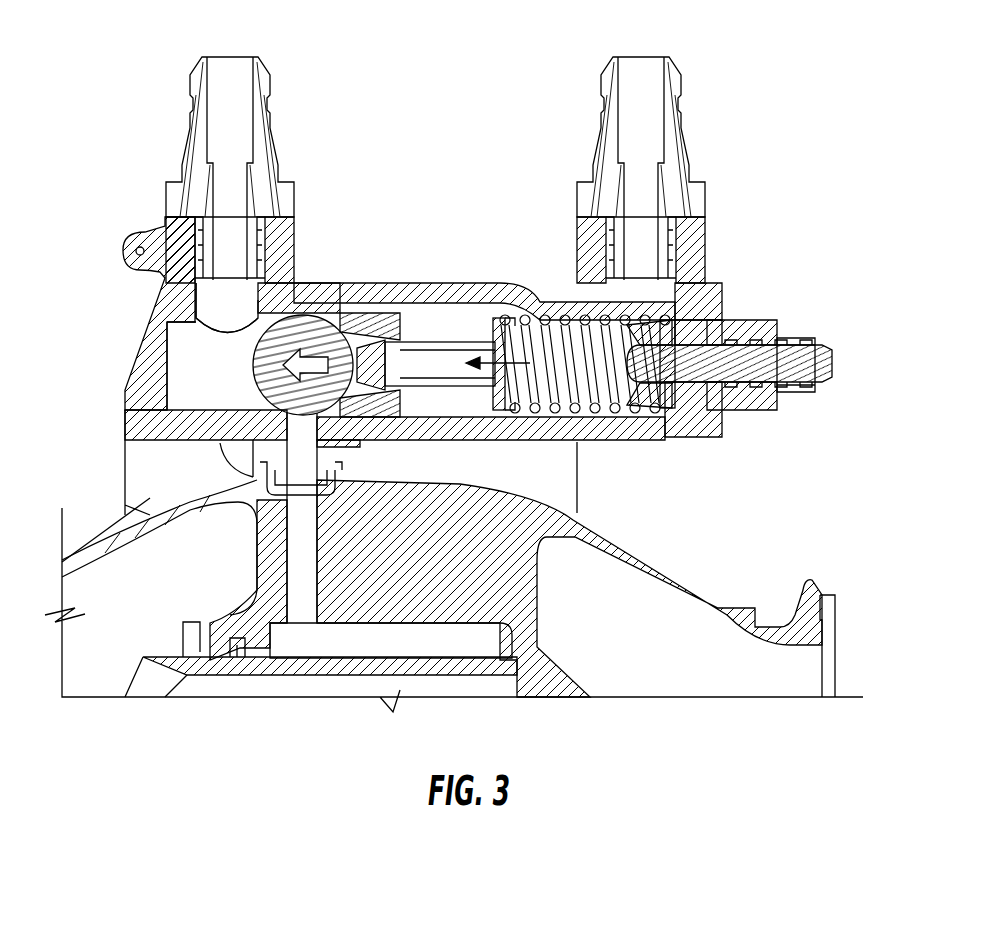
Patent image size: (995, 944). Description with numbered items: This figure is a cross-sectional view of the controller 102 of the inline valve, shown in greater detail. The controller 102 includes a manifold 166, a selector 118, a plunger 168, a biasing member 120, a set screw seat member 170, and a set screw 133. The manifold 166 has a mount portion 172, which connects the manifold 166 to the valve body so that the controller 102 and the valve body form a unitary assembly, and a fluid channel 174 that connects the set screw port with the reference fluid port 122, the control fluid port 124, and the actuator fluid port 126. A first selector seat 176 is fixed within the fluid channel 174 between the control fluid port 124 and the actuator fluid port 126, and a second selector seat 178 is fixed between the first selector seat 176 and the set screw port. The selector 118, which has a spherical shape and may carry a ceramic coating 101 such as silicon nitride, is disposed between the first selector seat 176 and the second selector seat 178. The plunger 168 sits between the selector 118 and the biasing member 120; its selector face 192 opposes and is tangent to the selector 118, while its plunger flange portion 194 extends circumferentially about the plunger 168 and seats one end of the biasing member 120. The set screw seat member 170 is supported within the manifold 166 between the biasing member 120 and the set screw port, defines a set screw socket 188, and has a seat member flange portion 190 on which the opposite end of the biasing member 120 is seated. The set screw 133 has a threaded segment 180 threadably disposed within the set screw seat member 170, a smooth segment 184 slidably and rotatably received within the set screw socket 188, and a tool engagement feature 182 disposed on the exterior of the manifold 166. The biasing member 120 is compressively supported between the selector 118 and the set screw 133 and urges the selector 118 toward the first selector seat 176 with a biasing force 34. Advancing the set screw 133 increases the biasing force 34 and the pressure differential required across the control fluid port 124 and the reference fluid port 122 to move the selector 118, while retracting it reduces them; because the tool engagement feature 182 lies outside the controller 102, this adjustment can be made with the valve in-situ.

The controller 102 is at (165, 730).
The control fluid port 124 is at (230, 72).
The reference fluid port 122 is at (645, 70).
The selector 118 is at (303, 322).
The manifold 166 is at (400, 300).
The first selector seat 176 is at (267, 315).
The ceramic coating 101 is at (273, 387).
The selector face 192 is at (350, 337).
The fluid channel 174 is at (432, 317).
The plunger 168 is at (470, 330).
The biasing force 34 is at (505, 412).
The biasing member 120 is at (548, 330).
The smooth segment 184 is at (666, 385).
The set screw socket 188 is at (705, 392).
The seat member flange portion 190 is at (662, 420).
The set screw seat member 170 is at (728, 302).
The threaded segment 180 is at (765, 330).
The set screw 133 is at (740, 378).
The tool engagement feature 182 is at (822, 345).
The actuator fluid port 126 is at (297, 442).
The second selector seat 178 is at (376, 420).
The plunger flange portion 194 is at (437, 305).
The mount portion 172 is at (150, 475).